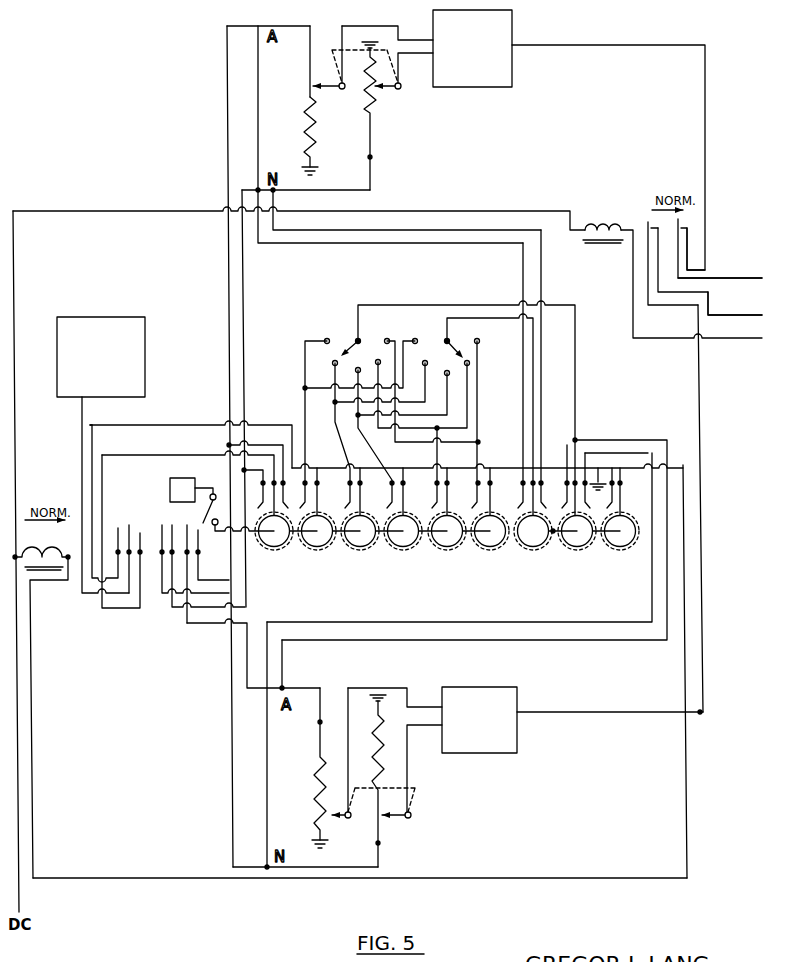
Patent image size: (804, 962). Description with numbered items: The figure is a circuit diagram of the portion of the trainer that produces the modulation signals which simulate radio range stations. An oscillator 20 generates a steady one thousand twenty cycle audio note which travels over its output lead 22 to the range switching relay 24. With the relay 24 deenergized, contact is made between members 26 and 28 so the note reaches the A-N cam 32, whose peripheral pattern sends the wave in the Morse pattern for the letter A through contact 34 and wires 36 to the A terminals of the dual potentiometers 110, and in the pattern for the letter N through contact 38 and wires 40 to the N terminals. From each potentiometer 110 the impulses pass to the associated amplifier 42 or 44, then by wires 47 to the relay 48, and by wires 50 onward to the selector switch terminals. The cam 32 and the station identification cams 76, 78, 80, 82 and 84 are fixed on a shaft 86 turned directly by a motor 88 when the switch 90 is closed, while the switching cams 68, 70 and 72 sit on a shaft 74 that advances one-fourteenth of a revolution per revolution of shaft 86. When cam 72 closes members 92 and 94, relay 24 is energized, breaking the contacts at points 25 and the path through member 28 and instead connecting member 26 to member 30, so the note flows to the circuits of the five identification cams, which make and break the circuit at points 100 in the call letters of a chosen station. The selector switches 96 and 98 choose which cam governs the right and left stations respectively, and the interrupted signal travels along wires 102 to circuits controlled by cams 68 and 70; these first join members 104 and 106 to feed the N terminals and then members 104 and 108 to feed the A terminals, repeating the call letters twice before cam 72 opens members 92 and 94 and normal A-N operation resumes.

The oscillator 20 is at (85, 323).
The oscillator output lead 22 is at (82, 460).
The range switching relay 24 is at (40, 550).
The contact points 25 is at (193, 527).
The relay contact member 26 is at (130, 525).
The relay contact member and wire 28 is at (142, 533).
The relay contact member and wire 30 is at (118, 527).
The A-N cam 32 is at (280, 543).
The contact 34 is at (284, 490).
The wires 36 is at (227, 285).
The contact 38 is at (262, 492).
The wires 40 is at (246, 335).
The amplifier 42 is at (483, 78).
The amplifier 44 is at (498, 745).
The wires 47 is at (637, 47).
The relay 48 is at (607, 223).
The wires 50 is at (733, 277).
The switching cam 68 is at (535, 542).
The switching cam 70 is at (580, 542).
The switching cam 72 is at (627, 542).
The rotating shaft 74 is at (553, 533).
The station identification cam 76 is at (323, 543).
The station identification cam 78 is at (366, 543).
The station identification cam 80 is at (409, 543).
The station identification cam 82 is at (453, 543).
The station identification cam 84 is at (493, 542).
The shaft 86 is at (382, 533).
The motor 88 is at (180, 480).
The switch 90 is at (208, 508).
The contact member 92 is at (615, 497).
The contact member 94 is at (622, 507).
The range station identification selector switch 96 is at (341, 338).
The range station identification selector switch 98 is at (421, 324).
The contact points 100 is at (313, 502).
The wires 102 is at (472, 318).
The contact member 104 is at (575, 383).
The contact member 106 is at (583, 465).
The contact member 108 is at (565, 490).
The dual potentiometer 110 is at (350, 105).